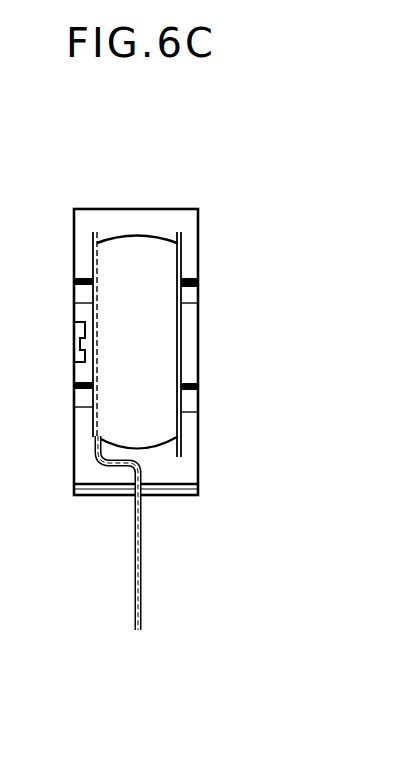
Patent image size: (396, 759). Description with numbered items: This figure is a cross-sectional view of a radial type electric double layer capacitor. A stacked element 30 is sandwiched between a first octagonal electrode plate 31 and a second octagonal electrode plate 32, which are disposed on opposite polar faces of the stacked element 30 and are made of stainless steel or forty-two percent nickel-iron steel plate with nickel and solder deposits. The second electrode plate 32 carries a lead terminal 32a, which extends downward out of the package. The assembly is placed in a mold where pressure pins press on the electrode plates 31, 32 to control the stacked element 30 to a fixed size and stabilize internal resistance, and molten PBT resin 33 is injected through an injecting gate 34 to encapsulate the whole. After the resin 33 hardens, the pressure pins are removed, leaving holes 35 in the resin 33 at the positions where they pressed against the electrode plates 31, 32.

The stacked element 30 is at (122, 247).
The first octagonal electrode plate 31 is at (180, 437).
The second octagonal electrode plate 32 is at (96, 437).
The lead terminal 32a is at (142, 561).
The PBT resin 33 is at (170, 218).
The injecting gate 34 is at (78, 333).
The holes 35 is at (80, 293).